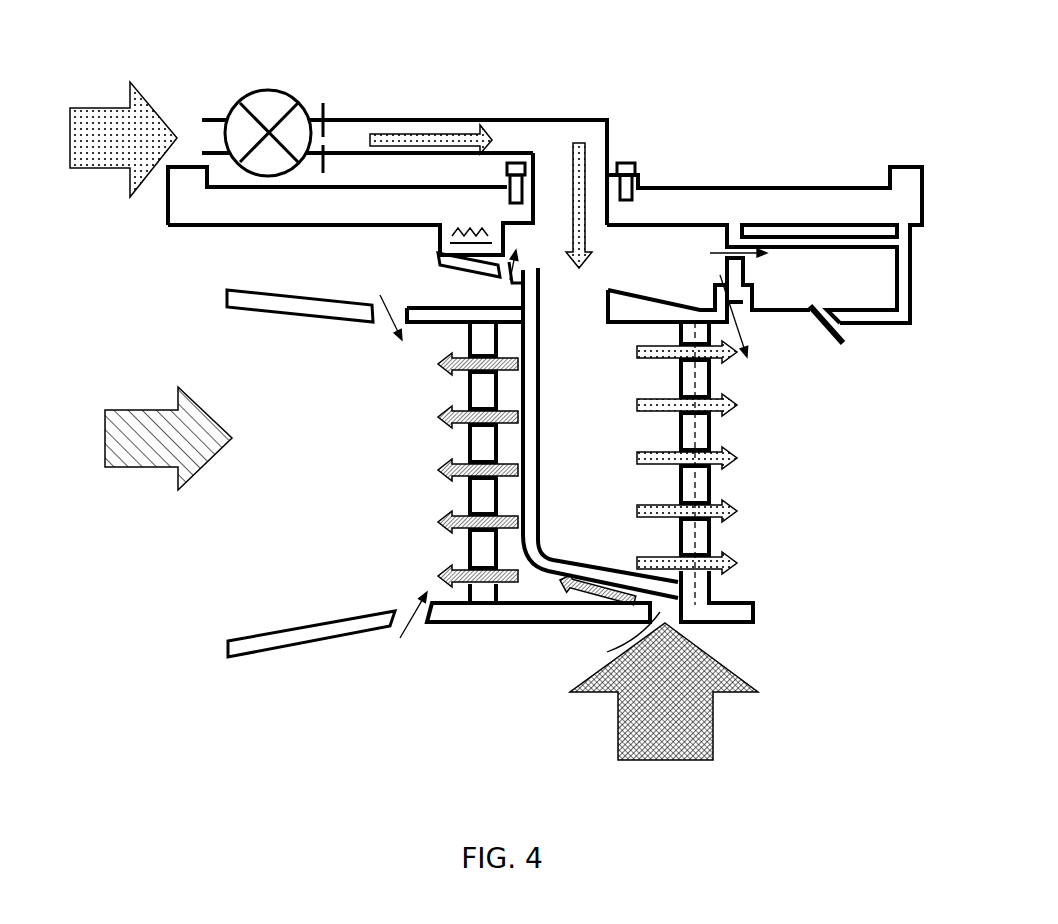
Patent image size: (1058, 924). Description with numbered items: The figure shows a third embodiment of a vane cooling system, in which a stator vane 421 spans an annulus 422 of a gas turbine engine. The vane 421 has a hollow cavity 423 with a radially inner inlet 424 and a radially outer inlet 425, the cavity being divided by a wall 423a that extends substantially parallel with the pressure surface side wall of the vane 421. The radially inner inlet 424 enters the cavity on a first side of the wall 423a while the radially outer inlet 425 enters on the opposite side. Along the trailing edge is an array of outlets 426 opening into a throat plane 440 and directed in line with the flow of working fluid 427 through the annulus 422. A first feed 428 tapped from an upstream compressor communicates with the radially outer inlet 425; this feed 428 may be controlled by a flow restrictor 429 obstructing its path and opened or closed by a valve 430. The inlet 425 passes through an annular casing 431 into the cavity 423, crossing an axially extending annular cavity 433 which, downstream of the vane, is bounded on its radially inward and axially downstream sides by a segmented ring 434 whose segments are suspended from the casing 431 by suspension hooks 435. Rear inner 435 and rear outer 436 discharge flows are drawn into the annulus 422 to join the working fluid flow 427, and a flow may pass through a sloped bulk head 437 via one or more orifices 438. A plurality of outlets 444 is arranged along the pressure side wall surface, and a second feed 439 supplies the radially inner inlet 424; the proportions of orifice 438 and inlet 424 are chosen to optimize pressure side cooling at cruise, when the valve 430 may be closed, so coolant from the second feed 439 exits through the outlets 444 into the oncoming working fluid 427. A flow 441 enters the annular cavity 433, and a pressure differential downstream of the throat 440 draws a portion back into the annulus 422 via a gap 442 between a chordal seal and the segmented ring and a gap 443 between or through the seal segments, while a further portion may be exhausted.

The stator vane 421 is at (483, 440).
The annulus 422 is at (316, 464).
The hollow cavity 423 is at (610, 396).
The wall 423a is at (548, 556).
The radially inner inlet 424 is at (609, 639).
The radially outer inlet 425 is at (615, 175).
The array of outlets 426 is at (682, 502).
The flow of working fluid 427 is at (133, 410).
The first feed 428 is at (85, 120).
The flow restrictor 429 is at (327, 110).
The valve 430 is at (265, 97).
The annular casing 431 is at (688, 195).
The axially extending annular cavity 433 is at (645, 284).
The segmented ring 434 is at (885, 323).
The suspension hooks 435 is at (905, 232).
The rear outer discharge flow 436 is at (380, 300).
The sloped bulk head 437 is at (462, 260).
The orifice 438 is at (510, 280).
The second feed 439 is at (440, 366).
The throat plane 440 is at (705, 592).
The flow 441 is at (520, 266).
The gap 442 is at (745, 297).
The gap 443 is at (820, 304).
The outlets 444 is at (483, 490).